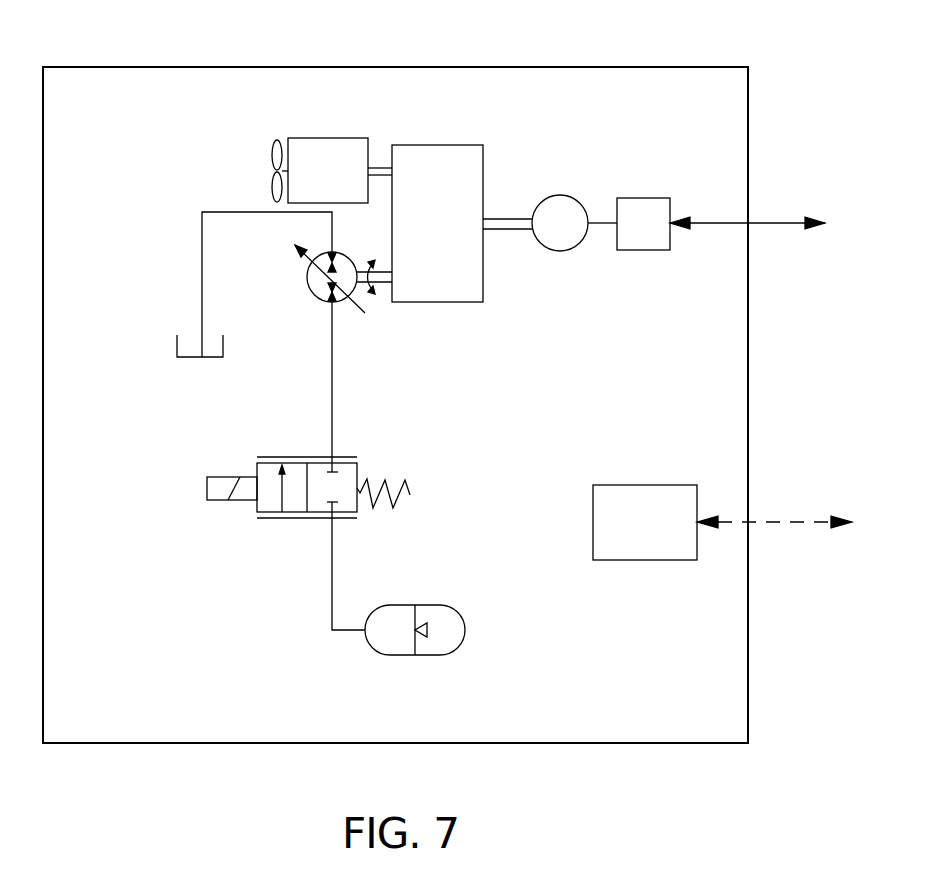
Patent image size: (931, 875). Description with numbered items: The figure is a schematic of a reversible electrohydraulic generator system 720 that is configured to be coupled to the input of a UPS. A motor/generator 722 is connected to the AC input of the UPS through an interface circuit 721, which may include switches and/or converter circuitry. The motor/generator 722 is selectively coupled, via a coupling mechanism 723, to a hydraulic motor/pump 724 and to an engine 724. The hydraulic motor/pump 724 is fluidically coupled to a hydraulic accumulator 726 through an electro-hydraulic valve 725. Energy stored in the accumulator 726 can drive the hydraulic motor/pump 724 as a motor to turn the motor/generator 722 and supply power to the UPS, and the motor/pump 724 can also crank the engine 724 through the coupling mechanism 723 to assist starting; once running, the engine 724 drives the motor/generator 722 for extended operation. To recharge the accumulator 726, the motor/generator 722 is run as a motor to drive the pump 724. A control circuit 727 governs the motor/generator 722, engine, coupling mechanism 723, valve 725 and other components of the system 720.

The electrohydraulic generator system 720 is at (397, 67).
The interface circuit 721 is at (645, 250).
The motor/generator 722 is at (562, 251).
The coupling mechanism 723 is at (437, 302).
The hydraulic motor/pump and engine 724 is at (328, 138).
The electro-hydraulic valve 725 is at (353, 518).
The hydraulic accumulator 726 is at (400, 605).
The control circuit 727 is at (645, 560).